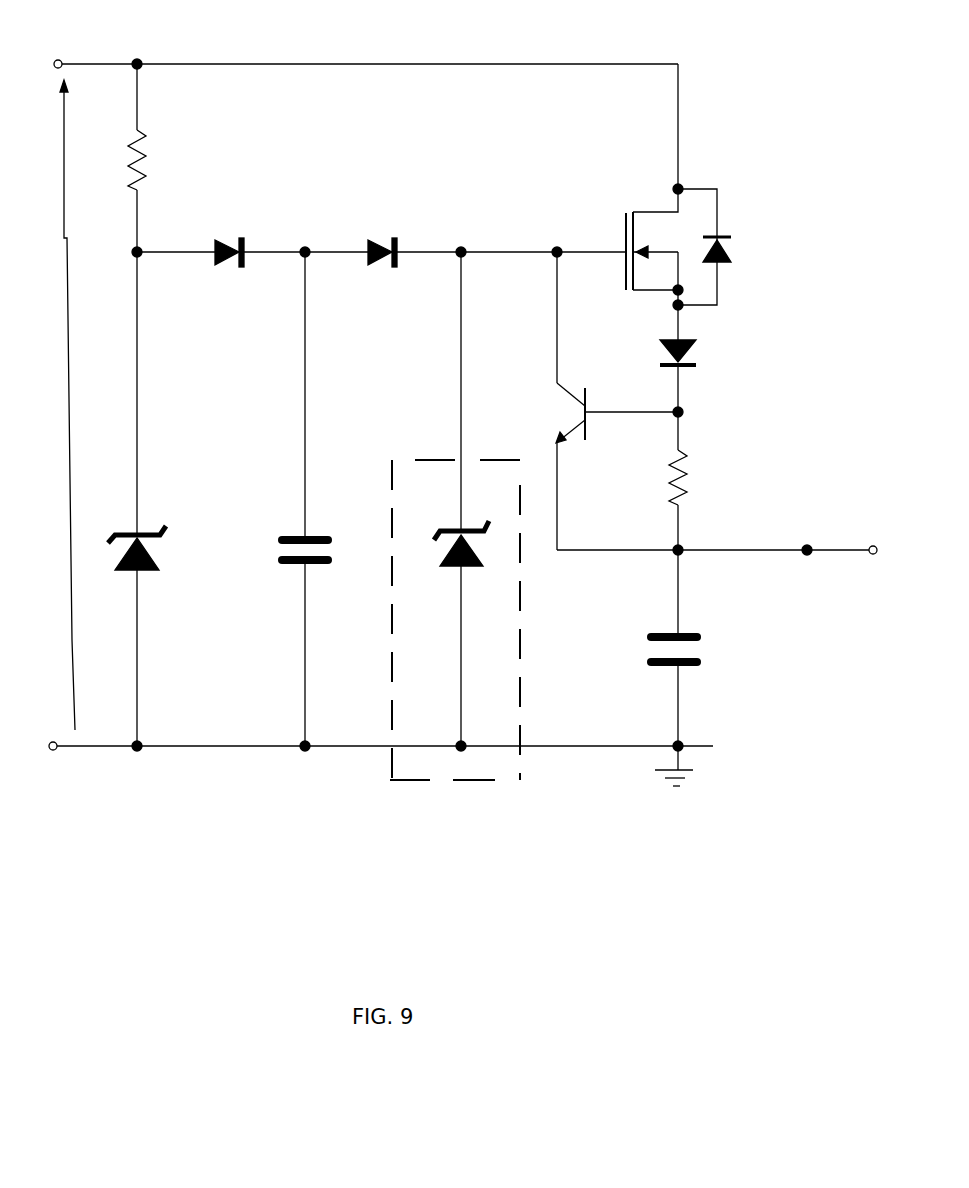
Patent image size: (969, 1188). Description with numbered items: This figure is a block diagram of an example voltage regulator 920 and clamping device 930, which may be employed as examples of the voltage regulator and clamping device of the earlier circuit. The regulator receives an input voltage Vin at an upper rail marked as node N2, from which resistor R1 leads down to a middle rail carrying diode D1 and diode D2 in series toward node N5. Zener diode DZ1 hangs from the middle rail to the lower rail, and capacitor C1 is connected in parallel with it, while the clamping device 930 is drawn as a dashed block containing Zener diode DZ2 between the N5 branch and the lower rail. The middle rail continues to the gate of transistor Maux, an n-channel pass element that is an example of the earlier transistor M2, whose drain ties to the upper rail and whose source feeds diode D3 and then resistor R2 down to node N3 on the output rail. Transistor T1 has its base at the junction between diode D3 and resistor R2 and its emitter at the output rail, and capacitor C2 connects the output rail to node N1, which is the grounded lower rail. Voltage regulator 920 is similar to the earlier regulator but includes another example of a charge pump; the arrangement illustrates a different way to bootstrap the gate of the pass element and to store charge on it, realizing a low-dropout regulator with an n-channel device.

The voltage regulator 920 is at (492, 149).
The clamping device 930 is at (501, 639).
The input voltage Vin is at (80, 405).
The node N2 is at (140, 62).
The resistor R1 is at (153, 158).
The diode D1 is at (227, 237).
The diode D2 is at (390, 237).
The node N5 is at (464, 251).
The capacitor C1 is at (313, 499).
The Zener diode DZ1 is at (122, 499).
The Zener diode DZ2 is at (444, 499).
The transistor T1 is at (601, 401).
The transistor Maux is at (683, 235).
The diode D3 is at (696, 358).
The resistor R2 is at (697, 481).
The node N3 is at (681, 548).
The capacitor C2 is at (683, 648).
The node N1 is at (681, 745).